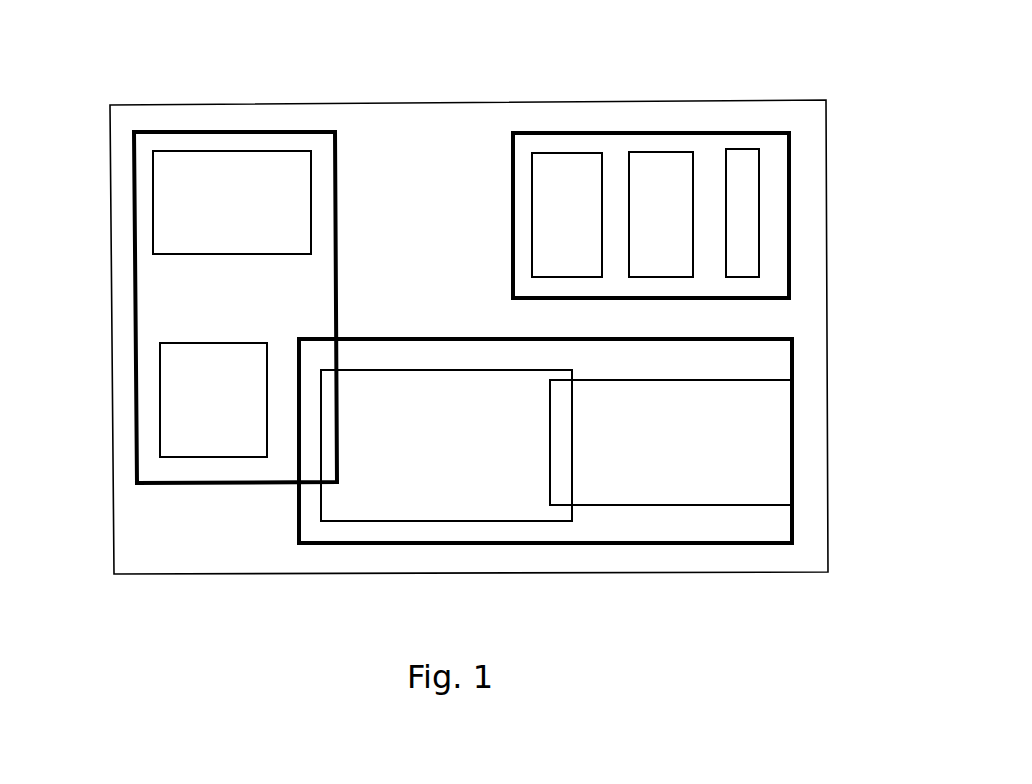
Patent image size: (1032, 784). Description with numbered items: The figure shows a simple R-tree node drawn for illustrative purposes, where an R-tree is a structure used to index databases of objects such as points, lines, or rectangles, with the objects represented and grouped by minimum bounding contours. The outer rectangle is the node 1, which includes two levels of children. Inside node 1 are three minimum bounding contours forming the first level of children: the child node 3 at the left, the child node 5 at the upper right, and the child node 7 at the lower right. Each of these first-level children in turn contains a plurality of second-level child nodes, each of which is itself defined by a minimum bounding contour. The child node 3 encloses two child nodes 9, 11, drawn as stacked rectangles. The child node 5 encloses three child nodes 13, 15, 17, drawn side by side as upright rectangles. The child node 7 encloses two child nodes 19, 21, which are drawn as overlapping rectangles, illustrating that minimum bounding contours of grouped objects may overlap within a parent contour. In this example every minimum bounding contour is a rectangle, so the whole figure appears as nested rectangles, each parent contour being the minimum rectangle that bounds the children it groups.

The node 1 is at (759, 99).
The child node 3 is at (322, 130).
The child node 5 is at (789, 221).
The child node 7 is at (328, 543).
The child node 9 is at (153, 220).
The child node 11 is at (160, 383).
The child node 13 is at (553, 152).
The child node 15 is at (647, 150).
The child node 17 is at (747, 150).
The child node 19 is at (467, 520).
The child node 21 is at (717, 503).